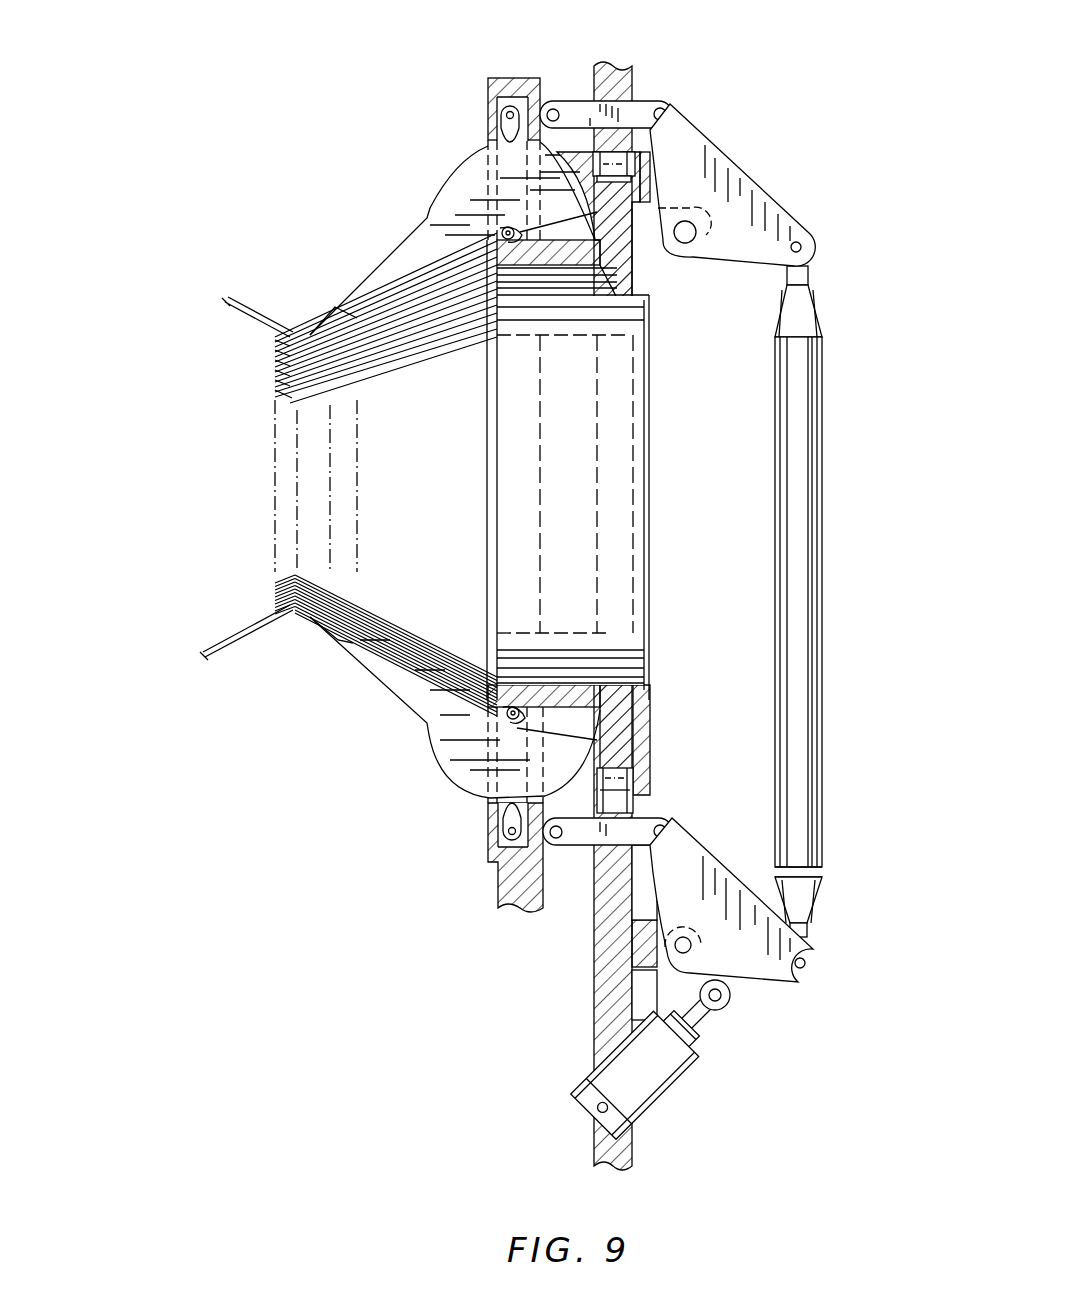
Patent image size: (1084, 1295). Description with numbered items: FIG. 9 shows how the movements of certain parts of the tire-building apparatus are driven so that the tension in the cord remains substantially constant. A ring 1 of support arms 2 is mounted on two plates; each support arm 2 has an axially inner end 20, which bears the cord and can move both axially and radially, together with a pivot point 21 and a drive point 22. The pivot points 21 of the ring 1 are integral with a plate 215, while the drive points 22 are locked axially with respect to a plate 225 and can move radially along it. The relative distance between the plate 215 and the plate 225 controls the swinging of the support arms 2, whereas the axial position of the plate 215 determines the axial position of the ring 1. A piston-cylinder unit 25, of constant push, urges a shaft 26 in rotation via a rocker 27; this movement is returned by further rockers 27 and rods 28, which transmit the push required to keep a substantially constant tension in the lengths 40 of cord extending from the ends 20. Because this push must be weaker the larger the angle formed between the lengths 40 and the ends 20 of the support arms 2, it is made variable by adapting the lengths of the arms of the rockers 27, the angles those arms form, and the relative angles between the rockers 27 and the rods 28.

The ring 1 is at (340, 697).
The support arm 2 is at (412, 192).
The axially inner end 20 is at (323, 327).
The pivot point 21 is at (508, 228).
The drive point 22 is at (505, 116).
The piston-cylinder unit 25 is at (652, 1095).
The shaft 26 is at (696, 958).
The rocker 27 is at (710, 153).
The rod 28 is at (640, 108).
The length of cord 40 is at (258, 312).
The plate 215 is at (650, 722).
The plate 225 is at (500, 883).